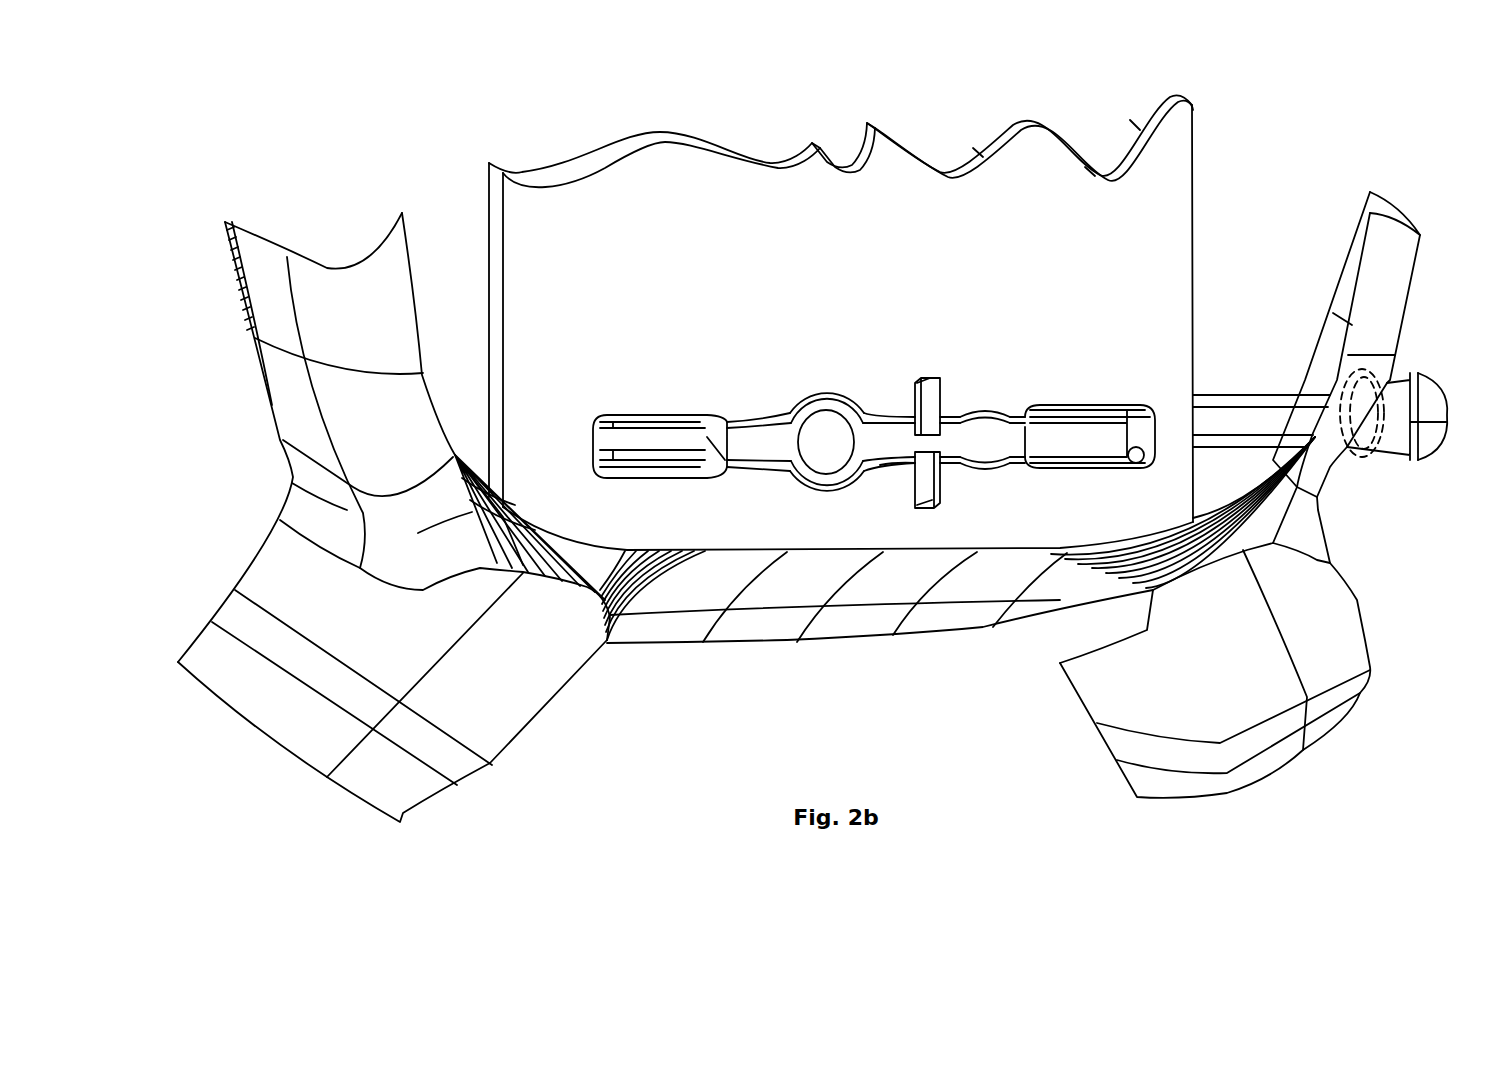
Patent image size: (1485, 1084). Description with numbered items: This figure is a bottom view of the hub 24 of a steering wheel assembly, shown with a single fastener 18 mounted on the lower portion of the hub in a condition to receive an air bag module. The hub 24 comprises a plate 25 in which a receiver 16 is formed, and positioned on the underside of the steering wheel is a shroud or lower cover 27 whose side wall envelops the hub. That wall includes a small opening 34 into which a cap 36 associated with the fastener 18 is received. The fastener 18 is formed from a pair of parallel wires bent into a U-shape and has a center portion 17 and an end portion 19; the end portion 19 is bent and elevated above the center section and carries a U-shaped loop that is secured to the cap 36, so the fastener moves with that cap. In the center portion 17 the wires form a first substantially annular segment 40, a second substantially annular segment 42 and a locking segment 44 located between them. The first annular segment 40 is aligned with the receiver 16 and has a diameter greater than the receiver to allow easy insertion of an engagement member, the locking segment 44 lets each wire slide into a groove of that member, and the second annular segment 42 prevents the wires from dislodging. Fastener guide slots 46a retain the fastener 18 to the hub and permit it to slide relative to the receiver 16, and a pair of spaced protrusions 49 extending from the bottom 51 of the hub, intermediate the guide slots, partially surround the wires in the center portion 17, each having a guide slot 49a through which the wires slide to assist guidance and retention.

The receiver 16 is at (874, 405).
The center portion 17 is at (900, 470).
The fastener 18 is at (765, 415).
The end portion 19 is at (1247, 393).
The hub 24 is at (848, 309).
The plate 25 is at (690, 165).
The shroud or lower cover 27 is at (490, 715).
The opening 34 is at (1356, 377).
The cap 36 is at (1423, 443).
The first substantially annular segment 40 is at (822, 392).
The second substantially annular segment 42 is at (987, 410).
The locking segment 44 is at (903, 413).
The fastener guide slot 46a is at (657, 412).
The protrusion 49 is at (928, 397).
The guide slot 49a is at (932, 385).
The bottom 51 is at (1185, 270).